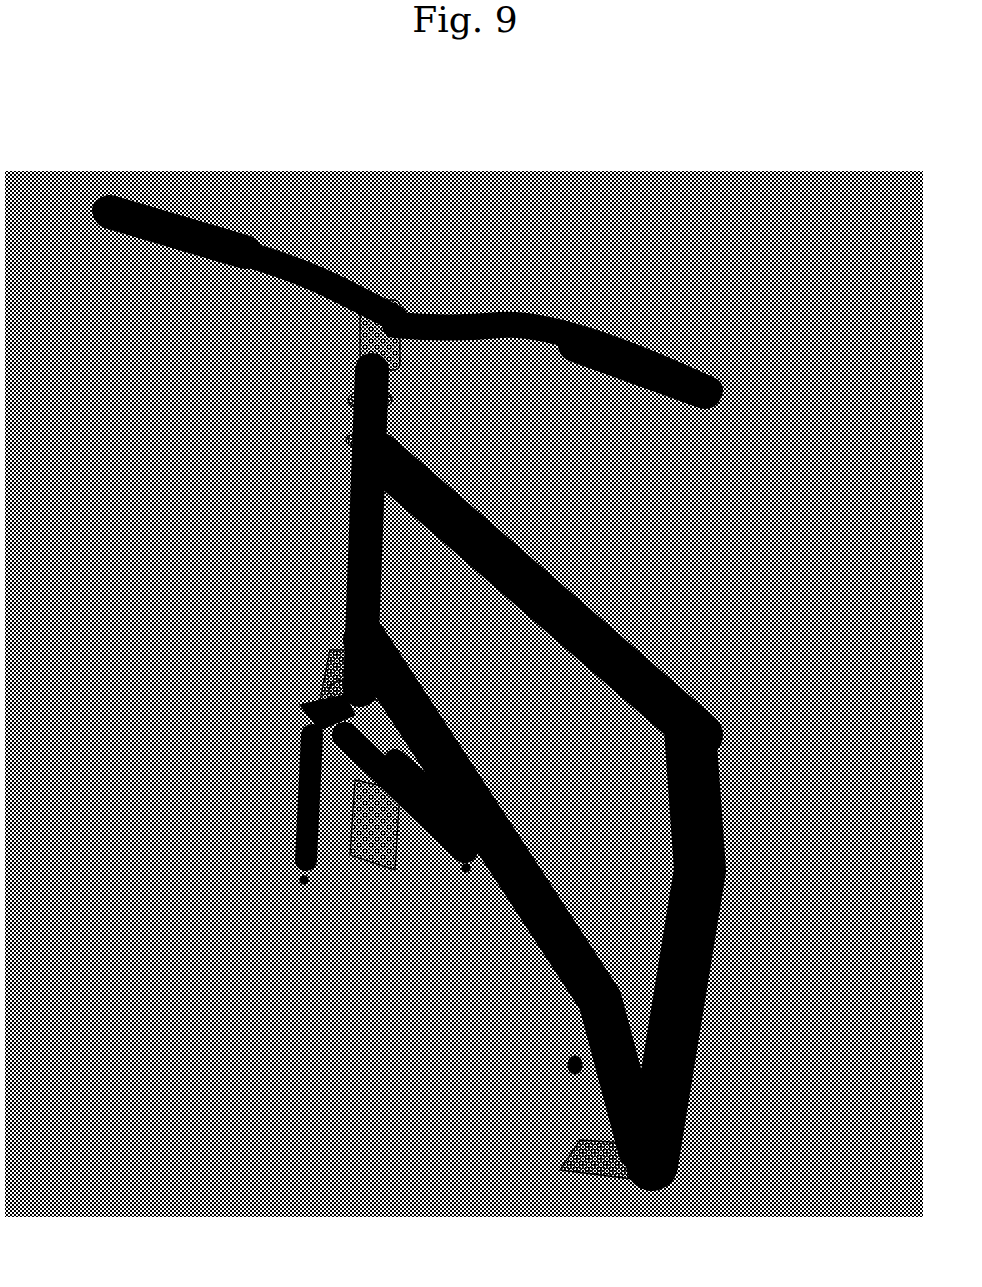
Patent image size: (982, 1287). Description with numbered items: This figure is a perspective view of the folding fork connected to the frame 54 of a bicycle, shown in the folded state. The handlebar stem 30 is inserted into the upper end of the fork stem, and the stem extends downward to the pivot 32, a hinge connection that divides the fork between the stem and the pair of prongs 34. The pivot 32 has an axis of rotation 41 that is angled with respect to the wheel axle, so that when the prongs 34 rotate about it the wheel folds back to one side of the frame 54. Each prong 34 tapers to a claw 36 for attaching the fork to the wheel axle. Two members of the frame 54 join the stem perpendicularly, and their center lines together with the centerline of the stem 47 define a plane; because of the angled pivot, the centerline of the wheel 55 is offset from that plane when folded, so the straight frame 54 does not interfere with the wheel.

The handlebar stem 30 is at (365, 380).
The centerline of the stem 47 is at (352, 435).
The axis of rotation 41 is at (275, 670).
The pivot 32 is at (305, 700).
The prongs 34 is at (295, 793).
The claw 36 is at (300, 877).
The centerline of the wheel 55 is at (362, 865).
The frame 54 is at (537, 700).